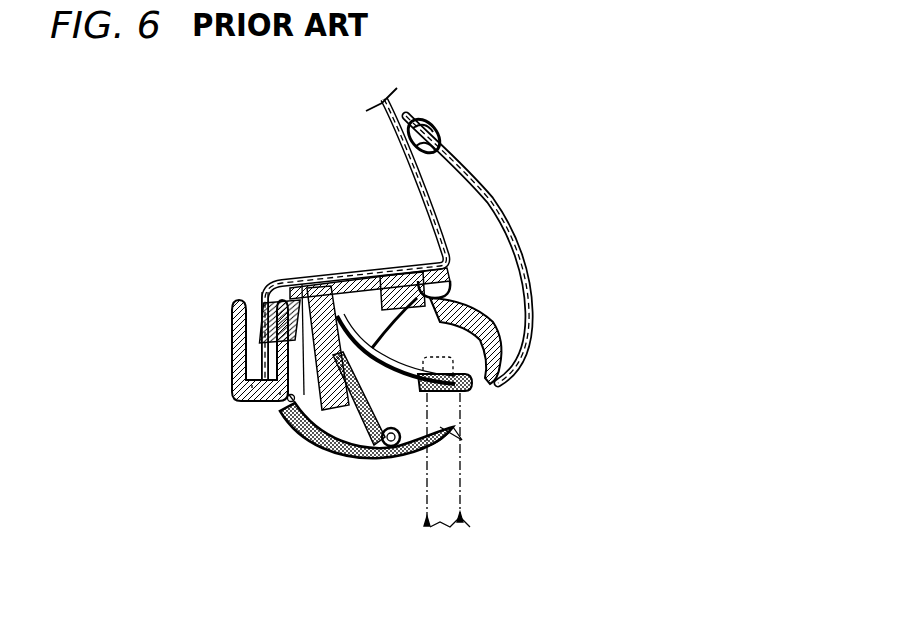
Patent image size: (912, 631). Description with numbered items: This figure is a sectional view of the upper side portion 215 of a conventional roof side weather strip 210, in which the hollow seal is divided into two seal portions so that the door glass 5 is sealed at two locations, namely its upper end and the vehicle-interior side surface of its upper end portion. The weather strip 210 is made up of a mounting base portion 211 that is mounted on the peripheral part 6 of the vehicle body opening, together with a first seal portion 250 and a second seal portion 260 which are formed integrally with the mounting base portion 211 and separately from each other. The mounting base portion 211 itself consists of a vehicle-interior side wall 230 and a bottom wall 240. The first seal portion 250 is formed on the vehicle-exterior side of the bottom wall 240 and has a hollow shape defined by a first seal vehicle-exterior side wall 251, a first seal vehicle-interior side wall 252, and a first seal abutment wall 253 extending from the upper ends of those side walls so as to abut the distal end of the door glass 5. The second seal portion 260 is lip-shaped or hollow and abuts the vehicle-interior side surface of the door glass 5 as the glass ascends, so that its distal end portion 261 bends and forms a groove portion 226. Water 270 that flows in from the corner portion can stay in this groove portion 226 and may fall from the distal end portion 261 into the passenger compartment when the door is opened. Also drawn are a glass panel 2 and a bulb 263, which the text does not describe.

The window glass 2 is at (503, 218).
The bottom wall 240 is at (407, 258).
The mounting base portion 211 is at (287, 282).
The peripheral part 6 is at (299, 282).
The first seal vehicle-interior side wall 252 is at (343, 268).
The first seal vehicle-exterior side wall 251 is at (497, 334).
The first seal portion 250 is at (463, 394).
The first seal abutment wall 253 is at (470, 393).
The door glass 5 is at (462, 440).
The groove portion 226 is at (462, 440).
The water 270 is at (233, 350).
The vehicle-interior side wall 230 is at (287, 397).
The roof side weather strip 210 is at (283, 466).
The upper side portion 215 is at (297, 441).
The second seal portion 260 is at (327, 450).
The hollow bulb 263 is at (338, 442).
The distal end portion 261 is at (404, 462).